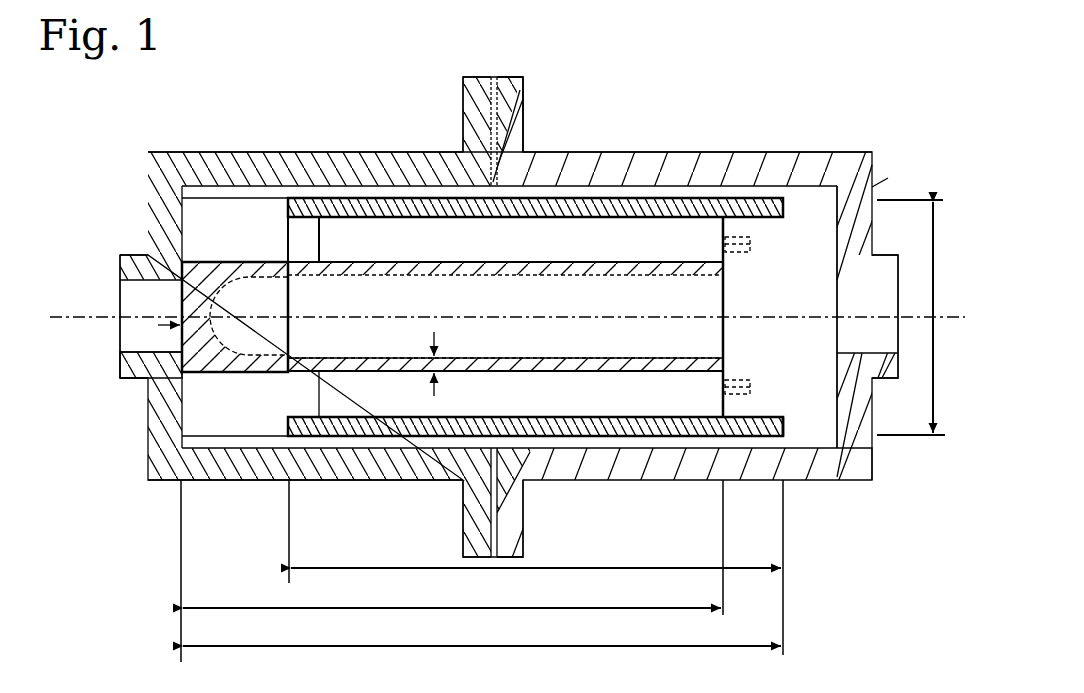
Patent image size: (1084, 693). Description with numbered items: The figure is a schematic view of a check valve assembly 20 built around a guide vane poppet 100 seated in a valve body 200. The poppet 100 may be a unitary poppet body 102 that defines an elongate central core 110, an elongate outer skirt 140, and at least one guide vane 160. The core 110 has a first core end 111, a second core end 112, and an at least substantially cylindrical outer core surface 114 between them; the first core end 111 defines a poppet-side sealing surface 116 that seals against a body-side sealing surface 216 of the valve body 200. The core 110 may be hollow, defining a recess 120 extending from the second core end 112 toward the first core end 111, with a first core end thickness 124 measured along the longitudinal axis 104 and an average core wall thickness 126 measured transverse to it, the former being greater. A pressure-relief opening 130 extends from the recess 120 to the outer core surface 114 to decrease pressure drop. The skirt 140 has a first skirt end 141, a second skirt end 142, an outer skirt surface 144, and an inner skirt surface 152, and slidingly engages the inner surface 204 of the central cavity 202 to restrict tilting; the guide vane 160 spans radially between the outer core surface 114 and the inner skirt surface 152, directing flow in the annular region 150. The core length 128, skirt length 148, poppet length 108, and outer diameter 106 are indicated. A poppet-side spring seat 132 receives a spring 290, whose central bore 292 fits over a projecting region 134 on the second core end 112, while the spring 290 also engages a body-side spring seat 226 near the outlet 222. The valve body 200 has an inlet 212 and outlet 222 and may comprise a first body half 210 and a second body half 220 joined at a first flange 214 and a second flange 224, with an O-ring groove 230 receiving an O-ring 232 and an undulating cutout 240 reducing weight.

The check valve assembly 20 is at (799, 46).
The guide vane poppet 100 is at (236, 232).
The unitary poppet body 102 is at (220, 253).
The longitudinal axis 104 is at (80, 320).
The outer diameter 106 is at (930, 262).
The poppet length 108 is at (475, 648).
The elongate central core 110 is at (509, 375).
The first core end 111 is at (181, 310).
The second core end 112 is at (724, 364).
The outer core surface 114 is at (505, 384).
The poppet-side sealing surface 116 is at (185, 360).
The recess 120 is at (696, 342).
The first core end thickness 124 is at (215, 325).
The average core wall thickness 126 is at (438, 342).
The core length 128 is at (455, 610).
The pressure-relief opening 130 is at (351, 261).
The poppet-side spring seat 132 is at (752, 394).
The projecting region 134 is at (739, 253).
The elongate outer skirt 140 is at (350, 440).
The first skirt end 141 is at (288, 425).
The second skirt end 142 is at (785, 427).
The outer skirt surface 144 is at (690, 440).
The skirt length 148 is at (515, 570).
The annular region 150 is at (302, 237).
The inner skirt surface 152 is at (450, 222).
The guide vane 160 is at (575, 230).
The valve body 200 is at (161, 147).
The central cavity 202 is at (812, 195).
The inner surface 204 is at (242, 442).
The first body half 210 is at (290, 150).
The inlet 212 is at (129, 335).
The first flange 214 is at (462, 88).
The body-side sealing surface 216 is at (235, 418).
The second body half 220 is at (716, 150).
The outlet 222 is at (888, 337).
The second flange 224 is at (520, 98).
The body-side spring seat 226 is at (834, 422).
The O-ring groove 230 is at (521, 127).
The O-ring 232 is at (500, 96).
The undulating cutout 240 is at (478, 547).
The spring 290 is at (843, 192).
The central bore 292 is at (812, 305).